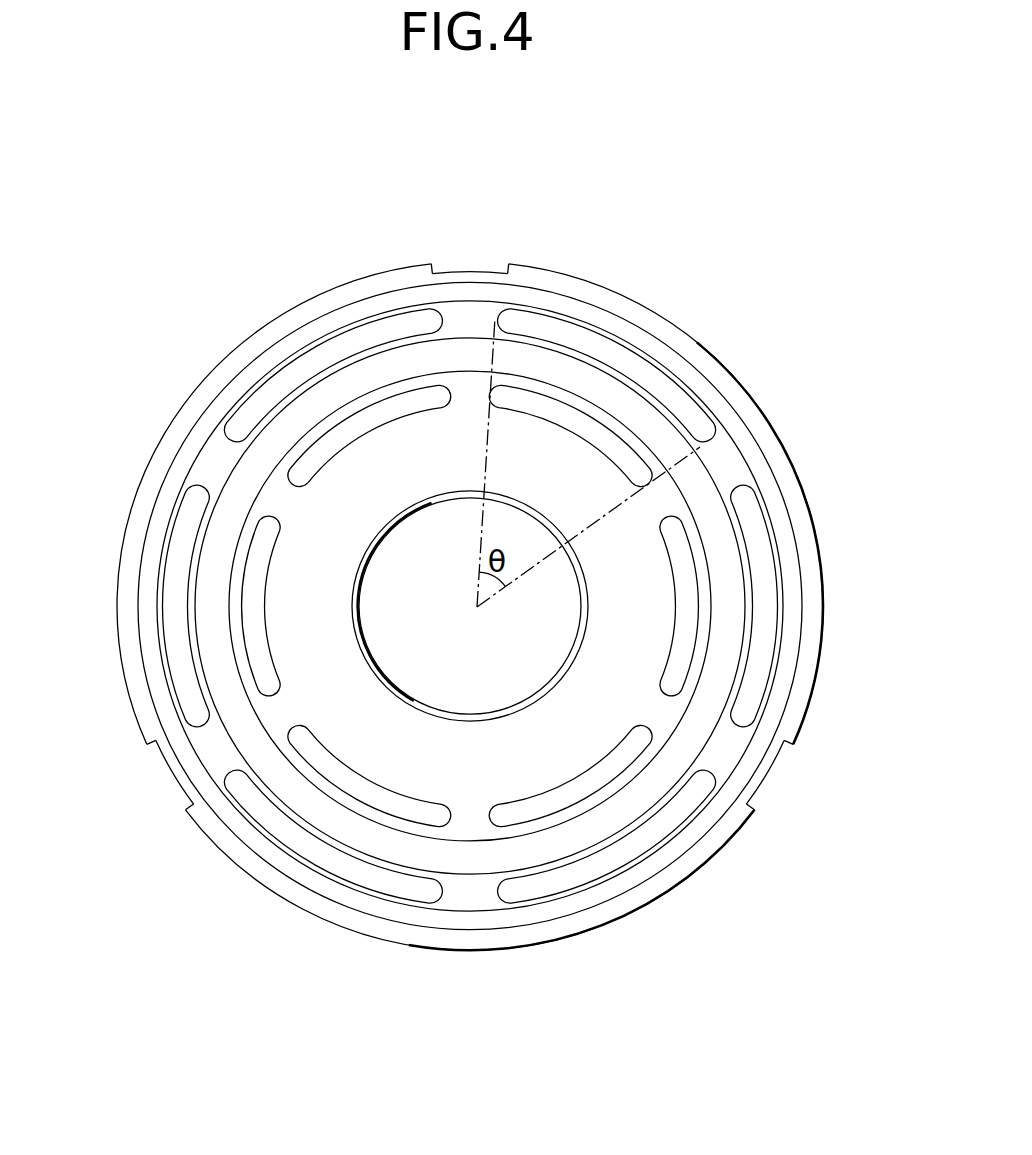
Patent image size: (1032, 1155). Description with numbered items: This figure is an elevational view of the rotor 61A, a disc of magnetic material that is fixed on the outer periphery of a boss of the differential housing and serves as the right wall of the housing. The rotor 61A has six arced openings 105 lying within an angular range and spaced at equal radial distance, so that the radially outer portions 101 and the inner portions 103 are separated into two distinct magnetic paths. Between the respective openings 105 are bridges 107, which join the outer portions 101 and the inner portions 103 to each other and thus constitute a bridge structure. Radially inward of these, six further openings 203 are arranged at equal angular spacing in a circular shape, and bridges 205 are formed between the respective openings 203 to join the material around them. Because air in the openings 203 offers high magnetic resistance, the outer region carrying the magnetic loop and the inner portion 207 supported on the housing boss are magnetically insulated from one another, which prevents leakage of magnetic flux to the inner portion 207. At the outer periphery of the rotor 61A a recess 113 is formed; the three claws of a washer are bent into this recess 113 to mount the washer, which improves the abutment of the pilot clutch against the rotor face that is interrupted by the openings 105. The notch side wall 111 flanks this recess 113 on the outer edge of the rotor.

The rotor 61A is at (616, 196).
The outer portion 101 is at (290, 352).
The inner portion 103 is at (310, 403).
The arced opening 105 is at (377, 332).
The bridge 107 is at (460, 326).
The notch side wall 111 is at (453, 273).
The recess 113 is at (498, 282).
The opening 203 is at (410, 392).
The bridge 205 is at (473, 386).
The inner portion 207 is at (548, 700).